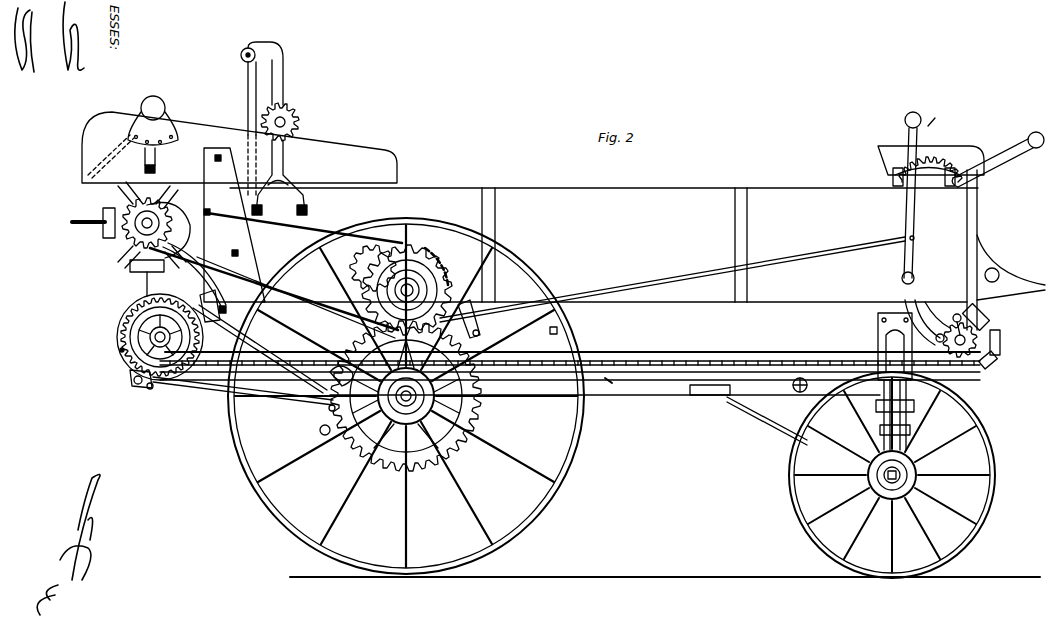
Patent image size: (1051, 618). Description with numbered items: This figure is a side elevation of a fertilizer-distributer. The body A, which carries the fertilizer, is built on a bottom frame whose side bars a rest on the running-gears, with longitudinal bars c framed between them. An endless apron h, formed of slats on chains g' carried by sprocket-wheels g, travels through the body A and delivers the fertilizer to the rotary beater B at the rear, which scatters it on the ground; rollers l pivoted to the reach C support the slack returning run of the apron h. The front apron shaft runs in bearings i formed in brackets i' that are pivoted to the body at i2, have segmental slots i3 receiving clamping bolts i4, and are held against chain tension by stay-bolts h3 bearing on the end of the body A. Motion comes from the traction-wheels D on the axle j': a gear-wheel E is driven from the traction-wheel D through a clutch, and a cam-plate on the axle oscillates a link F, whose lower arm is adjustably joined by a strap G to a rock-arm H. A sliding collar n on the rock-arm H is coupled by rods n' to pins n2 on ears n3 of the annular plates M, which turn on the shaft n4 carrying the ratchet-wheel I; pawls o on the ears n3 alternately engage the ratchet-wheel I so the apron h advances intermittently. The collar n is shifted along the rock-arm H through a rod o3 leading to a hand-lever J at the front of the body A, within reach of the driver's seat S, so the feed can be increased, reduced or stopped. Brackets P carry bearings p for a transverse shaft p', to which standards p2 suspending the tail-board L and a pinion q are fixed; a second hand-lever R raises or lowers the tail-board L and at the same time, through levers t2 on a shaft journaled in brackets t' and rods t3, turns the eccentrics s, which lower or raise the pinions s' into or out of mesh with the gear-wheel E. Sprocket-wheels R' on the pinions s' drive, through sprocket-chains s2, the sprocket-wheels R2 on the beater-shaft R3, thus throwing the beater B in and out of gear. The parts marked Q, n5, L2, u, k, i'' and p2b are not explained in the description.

The body A is at (604, 250).
The side bars a is at (871, 310).
The rotary beater B is at (100, 238).
The quadrant lever Q is at (153, 134).
The brackets P is at (288, 165).
The standards p2 is at (285, 70).
The tail-board L is at (248, 95).
The pinion q is at (300, 122).
The bearings p is at (313, 96).
The transverse shaft p' is at (318, 131).
The sprocket-wheels R2 is at (120, 206).
The beater-shaft R3 is at (130, 268).
The sprocket-chains s2 is at (276, 269).
The rods n' is at (274, 334).
The annular plates M is at (128, 320).
The ratchet-wheel I is at (118, 338).
The sleeve or collar n is at (543, 381).
The ears n3 is at (193, 301).
The shaft n4 is at (197, 291).
The lower pin n5 is at (127, 387).
The pawls o is at (144, 392).
The pins n2 is at (150, 385).
The reach C is at (628, 392).
The chains g' is at (570, 349).
The rollers l is at (608, 385).
The endless apron h is at (654, 382).
The diagonal brace L2 is at (748, 415).
The bearings i is at (867, 345).
The rod o3 is at (680, 276).
The traction-wheels D is at (572, 472).
The gear-wheel E is at (452, 448).
The axle j' is at (498, 417).
The pinions s' is at (413, 290).
The sprocket-wheels R' is at (440, 258).
The eccentrics s is at (373, 268).
The levers t2 is at (482, 318).
The brackets t' is at (487, 317).
The rods t3 is at (505, 313).
The longitudinal bars c is at (552, 334).
The link F is at (352, 448).
The strap G is at (320, 433).
The rock-arm H is at (328, 412).
The rear wheel u is at (918, 480).
The stay-bolts h3 is at (914, 392).
The hand-lever J is at (914, 212).
The driver's seat S is at (956, 146).
The hand-lever R is at (998, 164).
The sprocket-wheels g is at (978, 340).
The block k is at (990, 316).
The pivots i2 is at (957, 311).
The brackets i' is at (937, 310).
The segmental slots i3 is at (927, 309).
The arm i'' is at (915, 315).
The bolts i4 is at (936, 340).
The rear bracket p2b is at (990, 368).